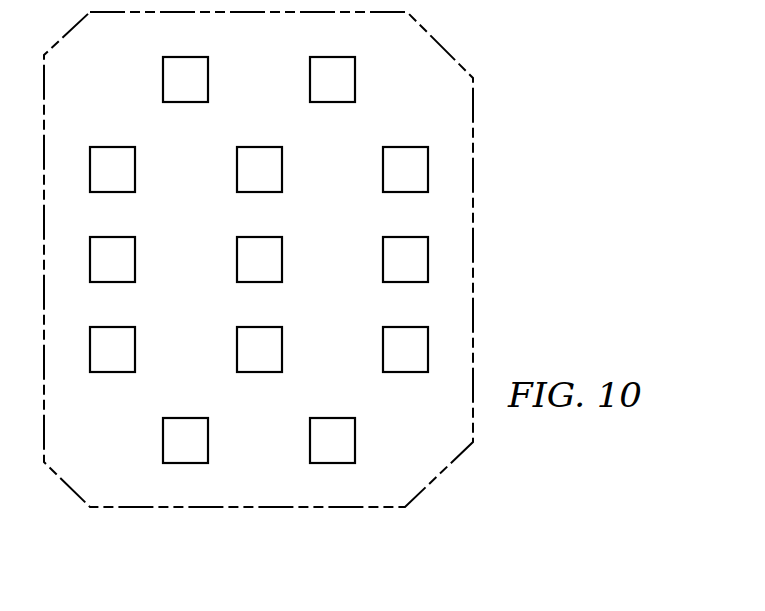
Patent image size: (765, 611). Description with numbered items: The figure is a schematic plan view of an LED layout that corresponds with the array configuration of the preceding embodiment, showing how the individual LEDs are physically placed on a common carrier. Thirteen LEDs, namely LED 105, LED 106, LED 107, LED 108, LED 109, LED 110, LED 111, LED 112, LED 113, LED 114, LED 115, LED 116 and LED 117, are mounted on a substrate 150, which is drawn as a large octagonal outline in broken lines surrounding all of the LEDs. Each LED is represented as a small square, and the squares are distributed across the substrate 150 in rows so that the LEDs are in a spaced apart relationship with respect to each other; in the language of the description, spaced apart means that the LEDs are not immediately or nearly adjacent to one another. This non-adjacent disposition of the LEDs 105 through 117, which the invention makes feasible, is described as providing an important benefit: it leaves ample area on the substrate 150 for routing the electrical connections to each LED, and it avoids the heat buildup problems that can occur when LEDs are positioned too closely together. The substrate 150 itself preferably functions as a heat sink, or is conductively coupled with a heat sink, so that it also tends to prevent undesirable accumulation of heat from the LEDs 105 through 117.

The substrate 150 is at (457, 230).
The LED 105 is at (355, 80).
The LED 106 is at (163, 80).
The LED 107 is at (383, 168).
The LED 108 is at (258, 147).
The LED 109 is at (135, 169).
The LED 110 is at (383, 267).
The LED 111 is at (282, 252).
The LED 112 is at (135, 258).
The LED 113 is at (383, 350).
The LED 114 is at (258, 372).
The LED 115 is at (135, 352).
The LED 116 is at (355, 442).
The LED 117 is at (163, 440).